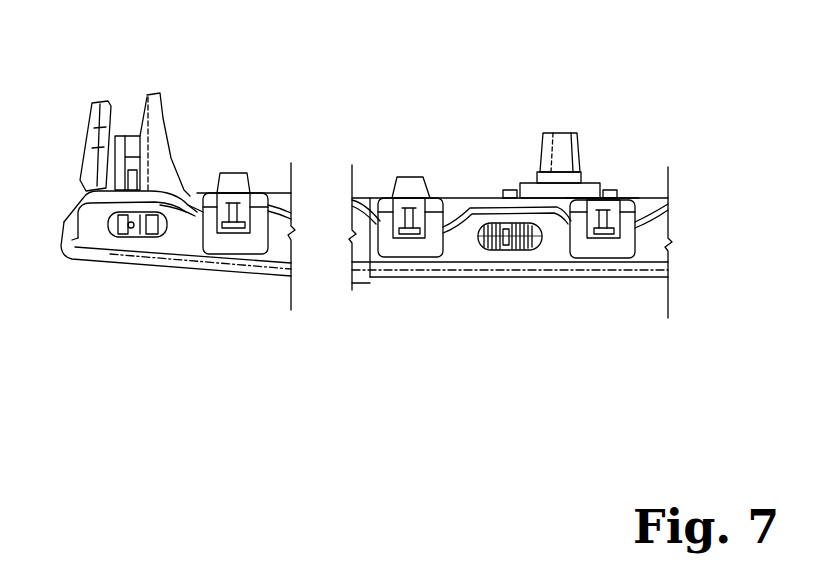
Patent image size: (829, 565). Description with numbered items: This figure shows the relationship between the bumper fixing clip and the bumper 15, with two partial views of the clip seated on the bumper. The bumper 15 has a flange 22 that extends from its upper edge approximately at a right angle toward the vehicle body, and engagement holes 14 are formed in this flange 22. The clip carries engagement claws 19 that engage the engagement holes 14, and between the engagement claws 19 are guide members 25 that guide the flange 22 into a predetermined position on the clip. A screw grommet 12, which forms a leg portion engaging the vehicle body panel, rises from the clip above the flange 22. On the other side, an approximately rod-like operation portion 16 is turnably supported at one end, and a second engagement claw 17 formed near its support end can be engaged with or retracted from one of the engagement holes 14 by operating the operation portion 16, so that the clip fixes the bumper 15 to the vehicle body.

The screw grommet 12 is at (560, 140).
The engagement hole 14 is at (150, 238).
The bumper 15 is at (388, 279).
The operation portion 16 is at (130, 143).
The second engagement claw 17 is at (130, 238).
The engagement claw 19 is at (497, 248).
The flange 22 is at (178, 230).
The guide member 25 is at (247, 245).